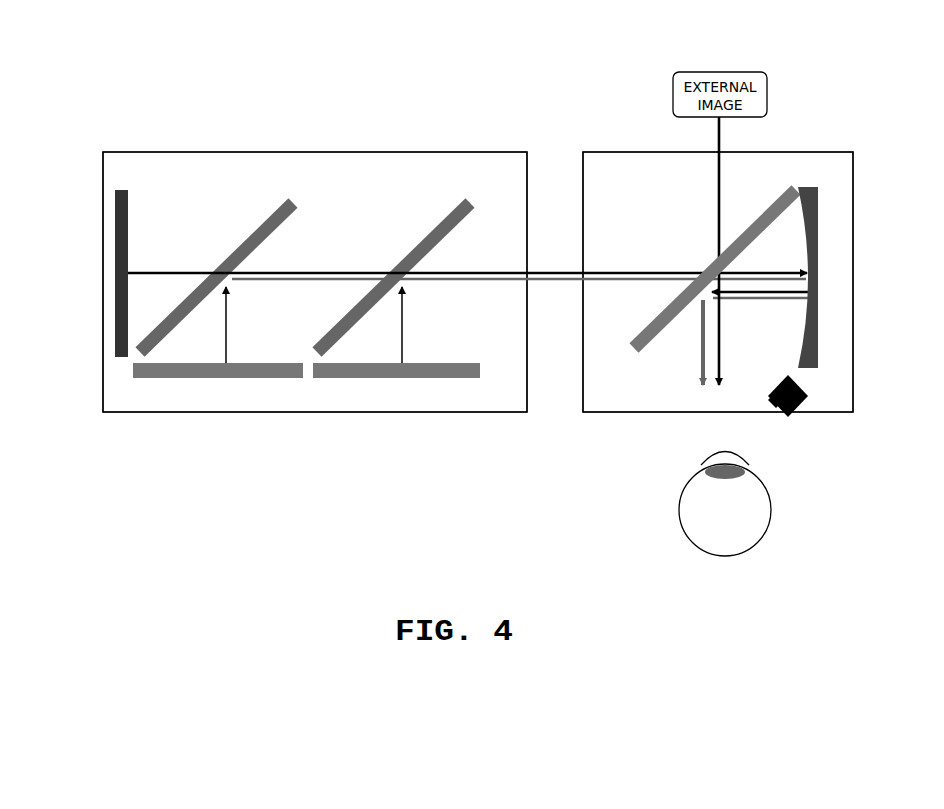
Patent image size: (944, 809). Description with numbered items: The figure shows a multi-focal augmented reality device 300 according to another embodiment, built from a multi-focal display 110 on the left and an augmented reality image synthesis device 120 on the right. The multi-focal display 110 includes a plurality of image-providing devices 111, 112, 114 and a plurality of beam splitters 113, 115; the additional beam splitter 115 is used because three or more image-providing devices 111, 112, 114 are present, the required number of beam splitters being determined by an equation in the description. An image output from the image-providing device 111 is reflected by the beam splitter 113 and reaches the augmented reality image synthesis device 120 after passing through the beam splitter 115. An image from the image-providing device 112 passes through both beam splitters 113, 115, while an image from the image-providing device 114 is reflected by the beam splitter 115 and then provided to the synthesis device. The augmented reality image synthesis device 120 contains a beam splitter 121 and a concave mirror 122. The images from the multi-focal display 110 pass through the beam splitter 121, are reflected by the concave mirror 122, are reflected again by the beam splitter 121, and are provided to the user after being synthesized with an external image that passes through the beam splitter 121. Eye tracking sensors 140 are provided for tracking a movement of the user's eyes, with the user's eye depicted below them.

The multi-focal augmented reality device 300 is at (458, 21).
The multi-focal display 110 is at (268, 152).
The augmented reality image synthesis device 120 is at (606, 152).
The image-providing device 111 is at (225, 380).
The image-providing device 112 is at (103, 306).
The beam splitter 113 is at (252, 228).
The image-providing device 114 is at (402, 380).
The beam splitter 115 is at (430, 228).
The beam splitter 121 is at (706, 262).
The concave mirror 122 is at (820, 196).
The eye tracking sensors 140 is at (802, 410).